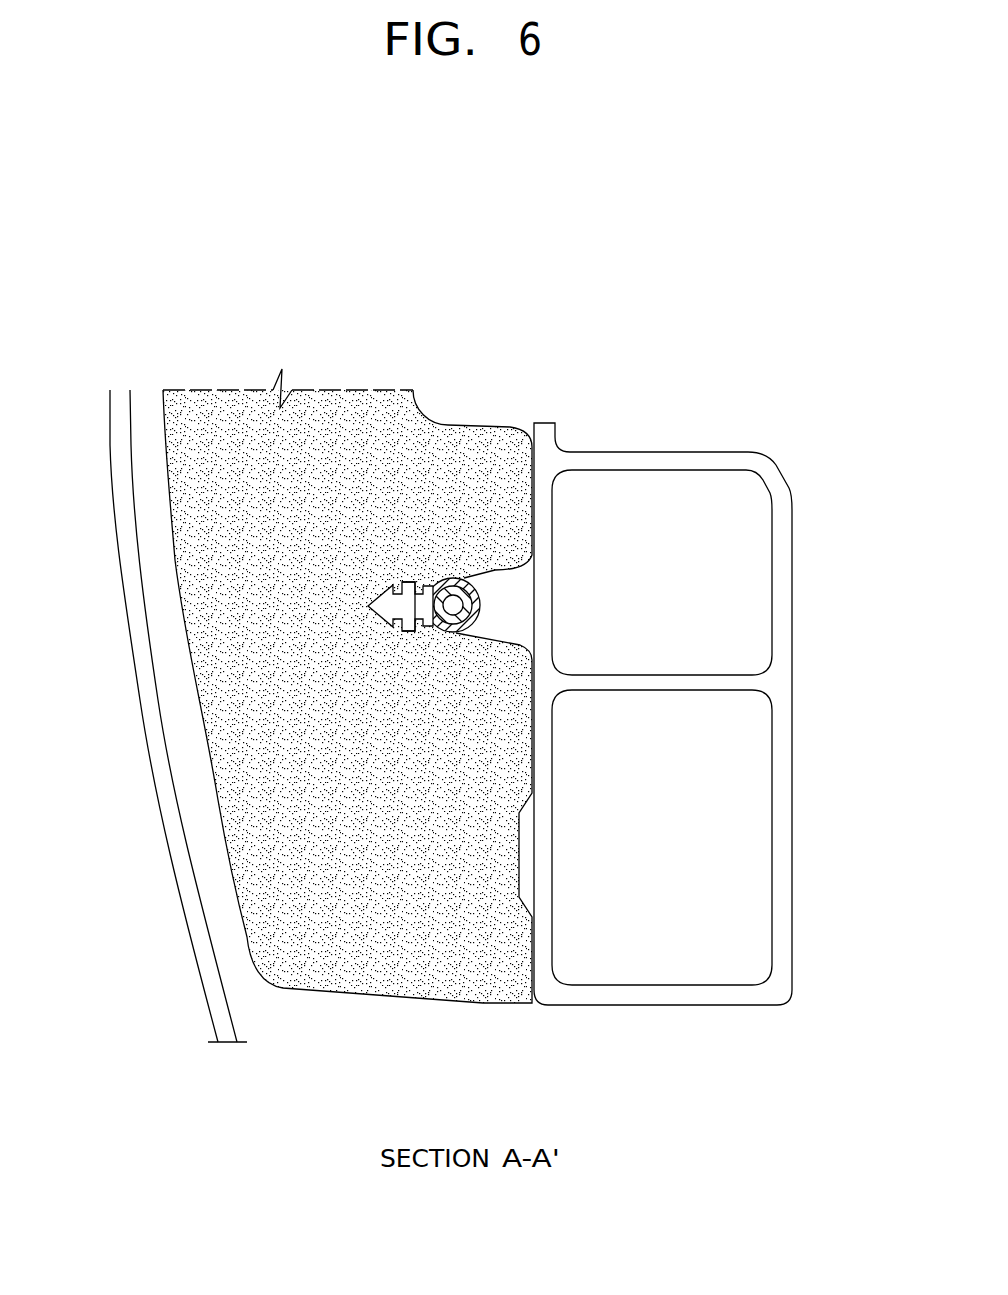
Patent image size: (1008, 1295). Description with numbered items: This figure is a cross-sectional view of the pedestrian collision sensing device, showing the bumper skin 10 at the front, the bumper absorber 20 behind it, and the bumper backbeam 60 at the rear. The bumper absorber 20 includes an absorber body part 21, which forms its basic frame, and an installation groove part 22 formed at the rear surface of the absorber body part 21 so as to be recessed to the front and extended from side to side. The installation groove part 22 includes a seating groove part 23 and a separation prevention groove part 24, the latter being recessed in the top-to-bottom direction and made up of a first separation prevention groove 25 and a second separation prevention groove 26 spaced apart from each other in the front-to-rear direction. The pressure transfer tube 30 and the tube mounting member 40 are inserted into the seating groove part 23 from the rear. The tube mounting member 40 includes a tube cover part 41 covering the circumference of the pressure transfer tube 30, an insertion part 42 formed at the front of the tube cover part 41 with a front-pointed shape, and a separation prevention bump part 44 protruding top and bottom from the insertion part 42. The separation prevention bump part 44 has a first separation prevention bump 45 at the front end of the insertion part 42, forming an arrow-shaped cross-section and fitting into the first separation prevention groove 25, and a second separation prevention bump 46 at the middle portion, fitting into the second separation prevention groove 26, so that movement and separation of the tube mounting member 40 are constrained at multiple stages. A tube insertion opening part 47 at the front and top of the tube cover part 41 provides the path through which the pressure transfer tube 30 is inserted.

The bumper skin 10 is at (140, 648).
The bumper absorber 20 is at (521, 833).
The absorber body part 21 is at (472, 862).
The installation groove part 22 is at (407, 703).
The seating groove part 23 is at (513, 622).
The separation prevention groove part 24 is at (352, 679).
The first separation prevention groove 25 is at (375, 604).
The second separation prevention groove 26 is at (390, 668).
The pressure transfer tube 30 is at (480, 572).
The tube mounting member 40 is at (572, 462).
The tube cover part 41 is at (462, 580).
The insertion part 42 is at (418, 580).
The separation prevention bump part 44 is at (359, 437).
The first separation prevention bump 45 is at (390, 588).
The second separation prevention bump 46 is at (385, 463).
The tube insertion opening part 47 is at (440, 576).
The bumper backbeam 60 is at (782, 660).